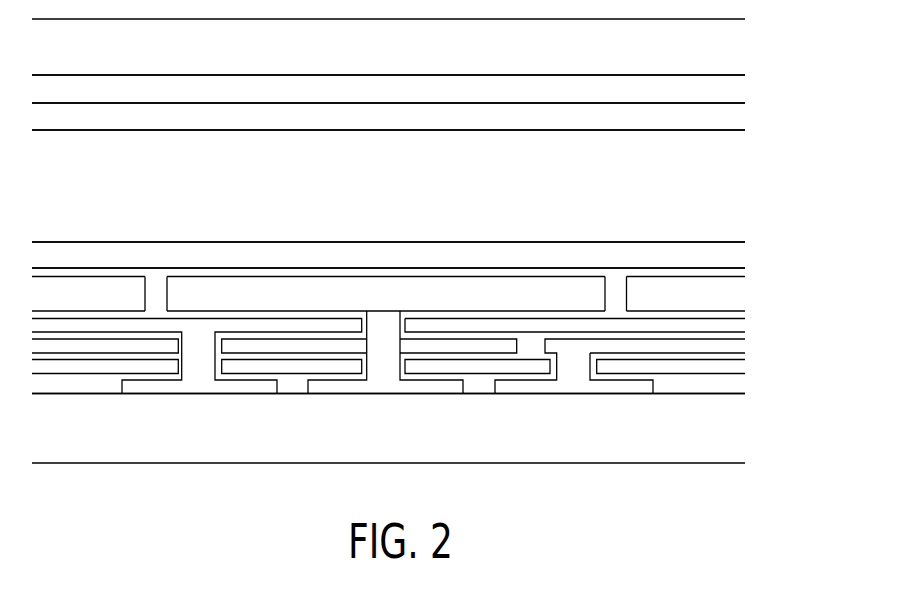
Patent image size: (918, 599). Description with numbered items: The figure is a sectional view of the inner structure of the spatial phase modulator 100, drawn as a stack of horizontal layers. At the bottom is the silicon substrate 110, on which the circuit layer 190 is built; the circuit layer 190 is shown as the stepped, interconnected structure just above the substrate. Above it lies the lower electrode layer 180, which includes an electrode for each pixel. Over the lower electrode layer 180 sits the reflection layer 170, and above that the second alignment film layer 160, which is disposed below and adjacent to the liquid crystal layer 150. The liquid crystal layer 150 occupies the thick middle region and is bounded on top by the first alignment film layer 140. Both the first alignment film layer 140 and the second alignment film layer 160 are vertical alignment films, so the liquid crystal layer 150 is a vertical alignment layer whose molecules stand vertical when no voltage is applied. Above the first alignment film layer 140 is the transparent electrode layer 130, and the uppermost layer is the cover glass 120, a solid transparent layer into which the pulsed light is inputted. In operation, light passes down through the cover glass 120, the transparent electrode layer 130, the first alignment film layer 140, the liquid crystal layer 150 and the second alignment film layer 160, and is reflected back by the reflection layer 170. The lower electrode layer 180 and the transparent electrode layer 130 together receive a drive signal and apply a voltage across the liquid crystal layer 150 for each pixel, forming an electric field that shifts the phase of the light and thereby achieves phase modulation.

The spatial phase modulator 100 is at (462, 236).
The silicon substrate 110 is at (429, 429).
The cover glass 120 is at (738, 50).
The transparent electrode layer 130 is at (737, 88).
The first alignment film layer 140 is at (737, 118).
The liquid crystal layer 150 is at (737, 183).
The second alignment film layer 160 is at (737, 255).
The reflection layer 170 is at (737, 273).
The lower electrode layer 180 is at (737, 295).
The circuit layer 190 is at (756, 393).